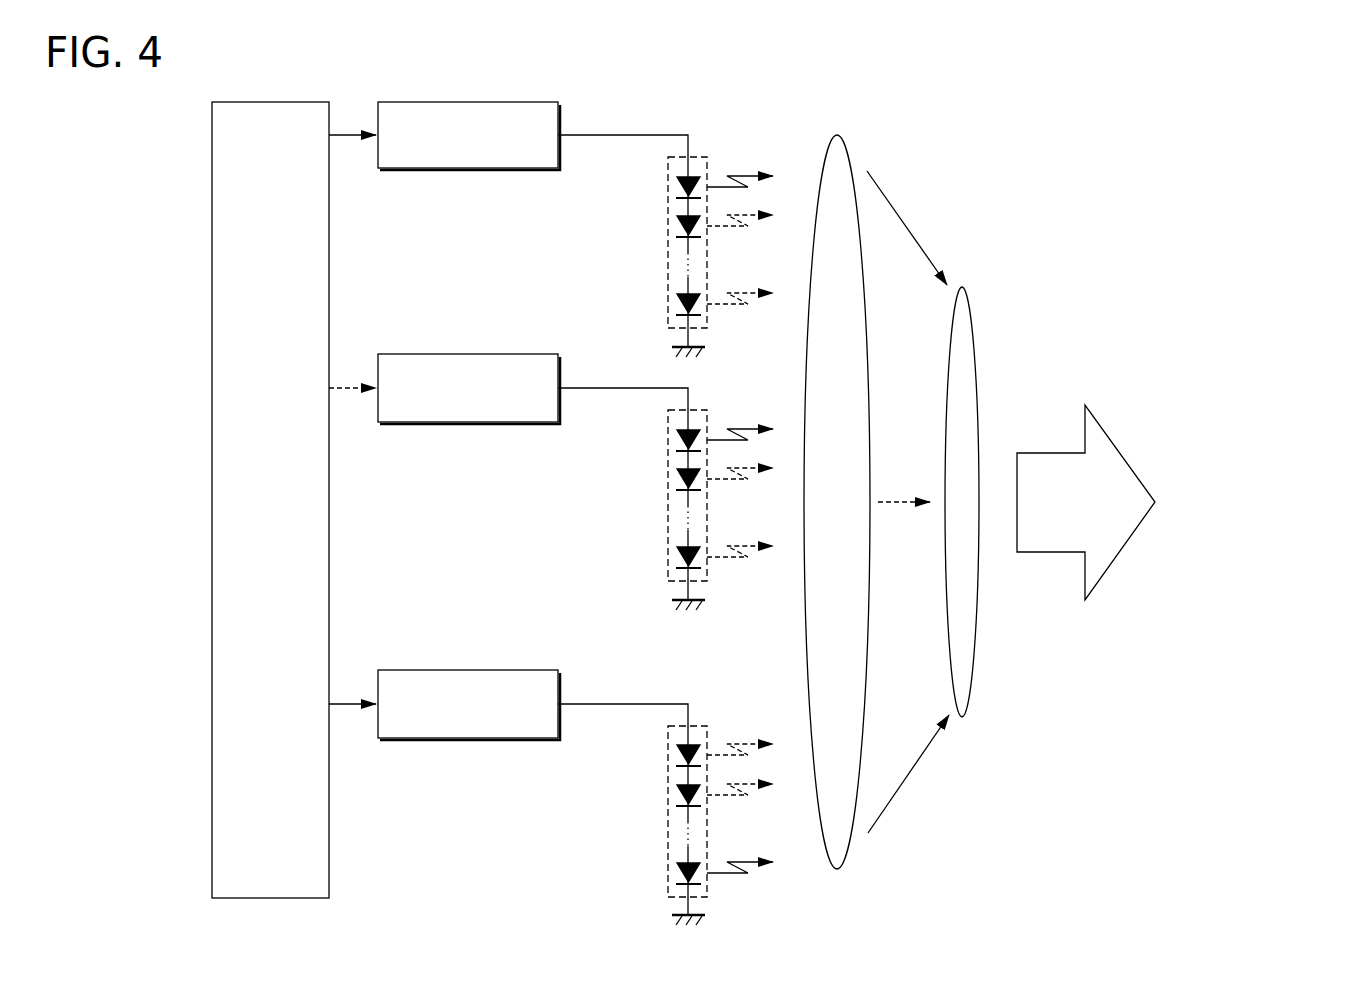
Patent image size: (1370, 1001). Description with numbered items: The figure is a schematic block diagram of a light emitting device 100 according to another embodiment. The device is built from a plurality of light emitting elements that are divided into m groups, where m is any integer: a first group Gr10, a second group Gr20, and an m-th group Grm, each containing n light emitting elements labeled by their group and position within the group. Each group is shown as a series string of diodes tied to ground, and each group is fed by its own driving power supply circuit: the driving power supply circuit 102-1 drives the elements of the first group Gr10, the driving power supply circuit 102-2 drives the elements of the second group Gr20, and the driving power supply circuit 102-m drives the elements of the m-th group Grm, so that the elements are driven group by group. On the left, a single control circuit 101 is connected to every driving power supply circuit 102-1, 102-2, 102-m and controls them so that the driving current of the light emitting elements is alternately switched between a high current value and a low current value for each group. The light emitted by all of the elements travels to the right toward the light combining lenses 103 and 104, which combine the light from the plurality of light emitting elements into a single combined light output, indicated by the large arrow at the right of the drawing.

The light emitting device 100 is at (1006, 106).
The control circuit 101 is at (290, 101).
The driving power supply circuit 102-1 is at (508, 102).
The driving power supply circuit 102-2 is at (508, 354).
The driving power supply circuit 102-m is at (509, 670).
The light combining lens 103 is at (858, 121).
The light combining lens 104 is at (963, 286).
The first group Gr10 is at (672, 241).
The second group Gr20 is at (672, 494).
The m-th group Grm is at (666, 809).